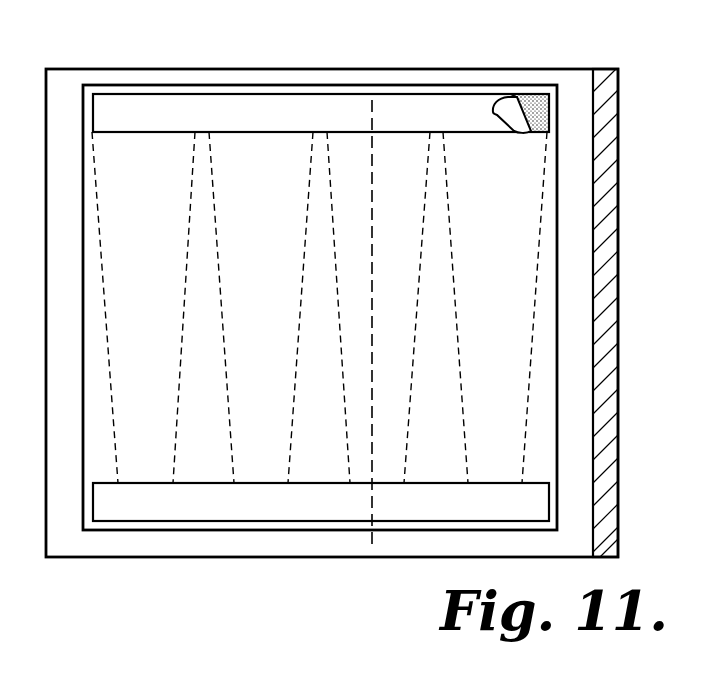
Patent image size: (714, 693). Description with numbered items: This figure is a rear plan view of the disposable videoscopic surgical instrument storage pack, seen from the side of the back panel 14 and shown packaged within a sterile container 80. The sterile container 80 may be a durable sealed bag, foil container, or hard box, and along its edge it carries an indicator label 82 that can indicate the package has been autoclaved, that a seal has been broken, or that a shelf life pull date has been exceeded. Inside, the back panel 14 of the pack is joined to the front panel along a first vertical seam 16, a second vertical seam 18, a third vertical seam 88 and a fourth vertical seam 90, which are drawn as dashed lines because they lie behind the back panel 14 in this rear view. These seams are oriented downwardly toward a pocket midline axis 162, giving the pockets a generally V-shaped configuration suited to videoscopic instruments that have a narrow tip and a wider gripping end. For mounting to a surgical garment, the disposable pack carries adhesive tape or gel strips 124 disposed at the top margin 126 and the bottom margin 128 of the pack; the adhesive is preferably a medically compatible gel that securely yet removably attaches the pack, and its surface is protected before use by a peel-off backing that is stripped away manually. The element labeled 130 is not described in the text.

The back panel 14 is at (540, 427).
The first vertical seam 16 is at (101, 252).
The second vertical seam 18 is at (182, 319).
The sterile container 80 is at (574, 86).
The indicator label 82 is at (603, 183).
The third vertical seam 88 is at (218, 253).
The fourth vertical seam 90 is at (299, 319).
The adhesive tape or gel strip 124 is at (536, 104).
The top margin 126 is at (311, 93).
The bottom margin 128 is at (310, 526).
The release tab 130 is at (498, 113).
The pocket midline axis 162 is at (376, 184).